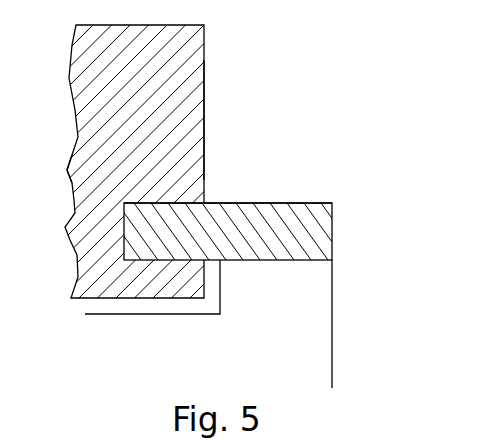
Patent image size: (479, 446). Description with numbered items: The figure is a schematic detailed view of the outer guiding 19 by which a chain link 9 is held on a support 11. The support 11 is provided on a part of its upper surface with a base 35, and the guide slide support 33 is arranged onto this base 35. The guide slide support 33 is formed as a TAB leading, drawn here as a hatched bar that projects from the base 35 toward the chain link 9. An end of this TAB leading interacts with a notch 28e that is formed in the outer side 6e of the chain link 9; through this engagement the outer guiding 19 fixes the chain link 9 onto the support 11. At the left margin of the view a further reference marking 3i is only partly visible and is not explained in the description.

The chain link 9 is at (114, 168).
The guide slide support 33 is at (254, 239).
The base 35 is at (284, 312).
The support 11 is at (115, 317).
The outer side of the chain link 6e is at (205, 118).
The outer guiding 19 is at (266, 194).
The notch 28e is at (124, 231).
The element (partially visible) 3i is at (6, 153).